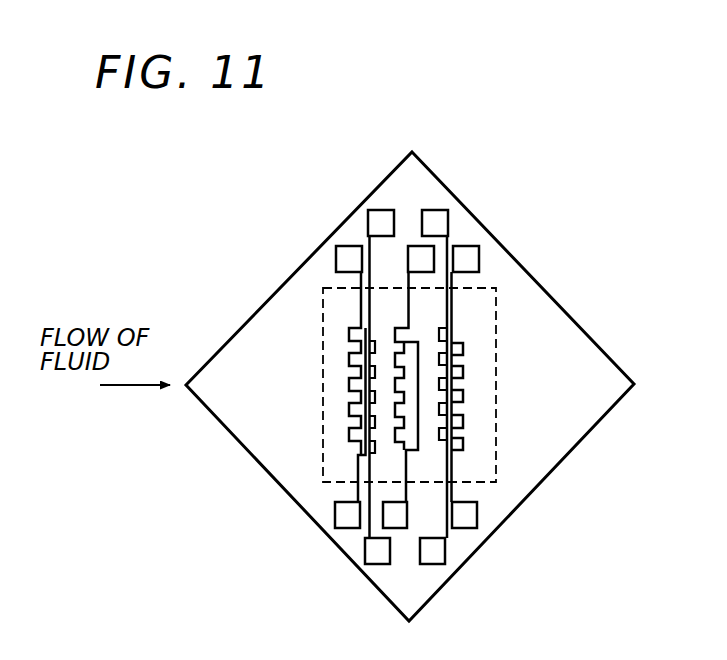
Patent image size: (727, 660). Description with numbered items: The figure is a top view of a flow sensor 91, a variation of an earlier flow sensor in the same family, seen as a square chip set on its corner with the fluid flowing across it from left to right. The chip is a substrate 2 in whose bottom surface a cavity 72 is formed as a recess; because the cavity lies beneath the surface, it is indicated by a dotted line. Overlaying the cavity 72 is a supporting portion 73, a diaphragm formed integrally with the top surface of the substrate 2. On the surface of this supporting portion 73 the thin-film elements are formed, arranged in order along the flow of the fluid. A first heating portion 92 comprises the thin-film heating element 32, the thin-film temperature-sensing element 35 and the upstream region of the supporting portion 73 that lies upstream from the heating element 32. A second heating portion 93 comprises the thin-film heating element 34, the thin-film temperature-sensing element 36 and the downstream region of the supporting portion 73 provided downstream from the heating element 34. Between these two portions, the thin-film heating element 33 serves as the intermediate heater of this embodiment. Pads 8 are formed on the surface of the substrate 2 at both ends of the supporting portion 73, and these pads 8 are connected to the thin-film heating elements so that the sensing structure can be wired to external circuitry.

The substrate 2 is at (585, 407).
The pads 8 is at (408, 246).
The thin-film heating element 32 is at (353, 440).
The thin-film heating element 33 is at (398, 364).
The thin-film heating element 34 is at (462, 423).
The thin-film temperature-sensing element 35 is at (352, 373).
The thin-film temperature-sensing element 36 is at (463, 388).
The cavity 72 is at (498, 311).
The supporting portion 73 is at (483, 364).
The flow sensor 91 is at (557, 227).
The first heating portion 92 is at (310, 227).
The second heating portion 93 is at (503, 235).